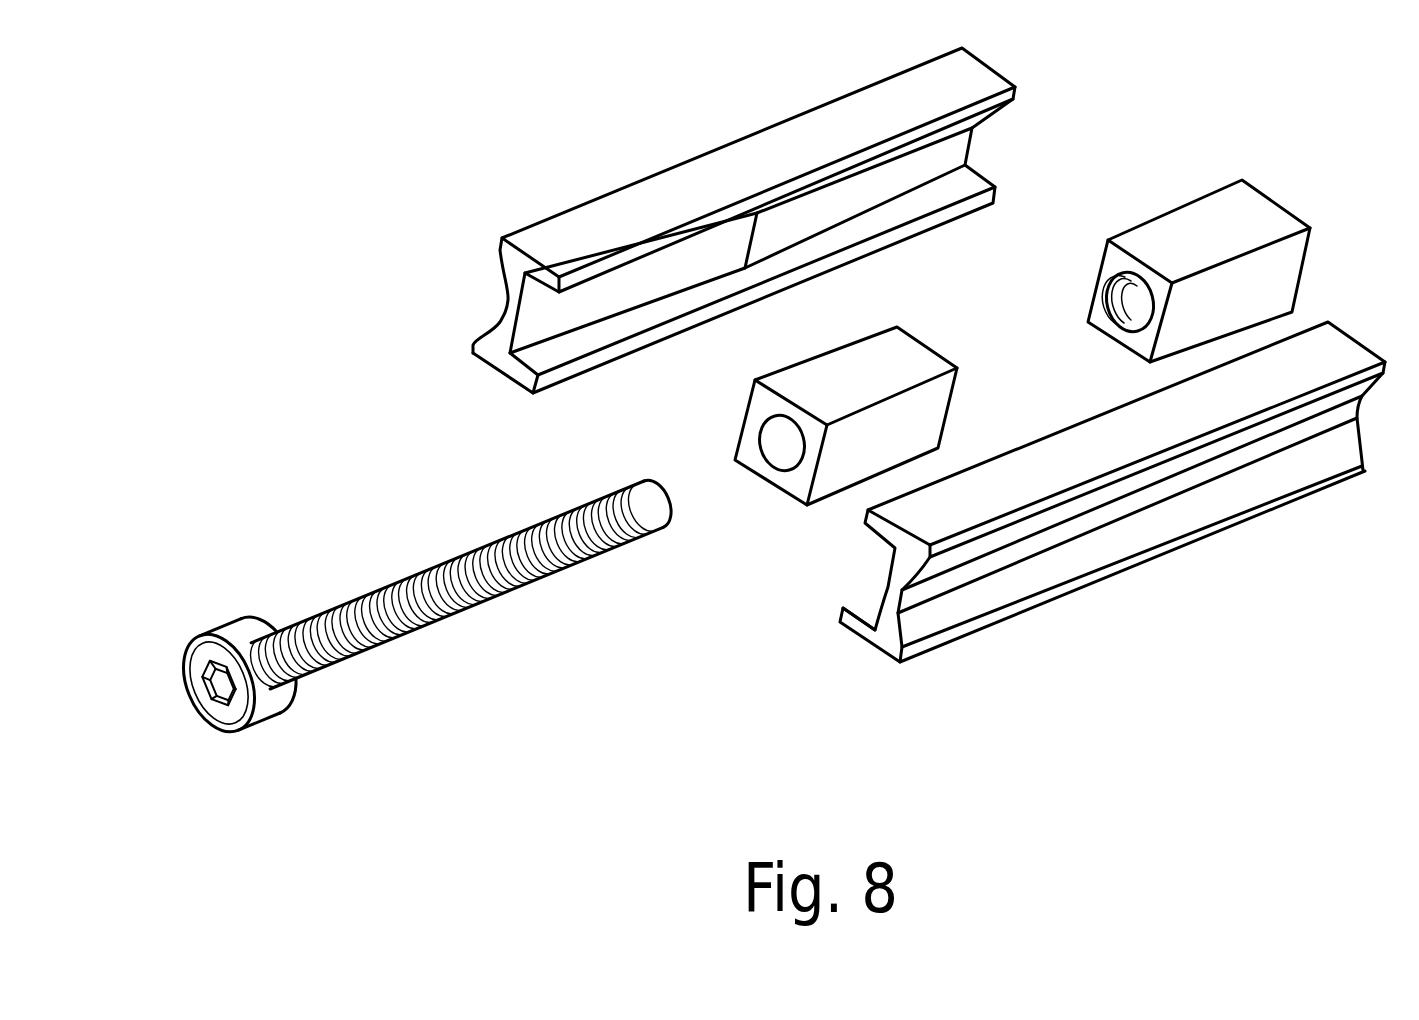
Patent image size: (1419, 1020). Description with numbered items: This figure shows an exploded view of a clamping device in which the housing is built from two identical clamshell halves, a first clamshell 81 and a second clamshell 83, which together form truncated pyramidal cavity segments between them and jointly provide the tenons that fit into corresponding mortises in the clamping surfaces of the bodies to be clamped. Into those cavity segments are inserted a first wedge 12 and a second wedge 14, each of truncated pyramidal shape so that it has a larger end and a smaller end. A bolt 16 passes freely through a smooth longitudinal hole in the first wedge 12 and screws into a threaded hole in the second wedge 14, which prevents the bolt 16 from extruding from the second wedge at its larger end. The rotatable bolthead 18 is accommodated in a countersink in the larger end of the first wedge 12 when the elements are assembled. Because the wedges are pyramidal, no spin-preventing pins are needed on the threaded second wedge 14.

The first wedge 12 is at (778, 488).
The second wedge 14 is at (1208, 192).
The bolt 16 is at (465, 613).
The rotatable bolthead 18 is at (252, 727).
The first clamshell 81 is at (1127, 573).
The second clamshell 83 is at (637, 176).